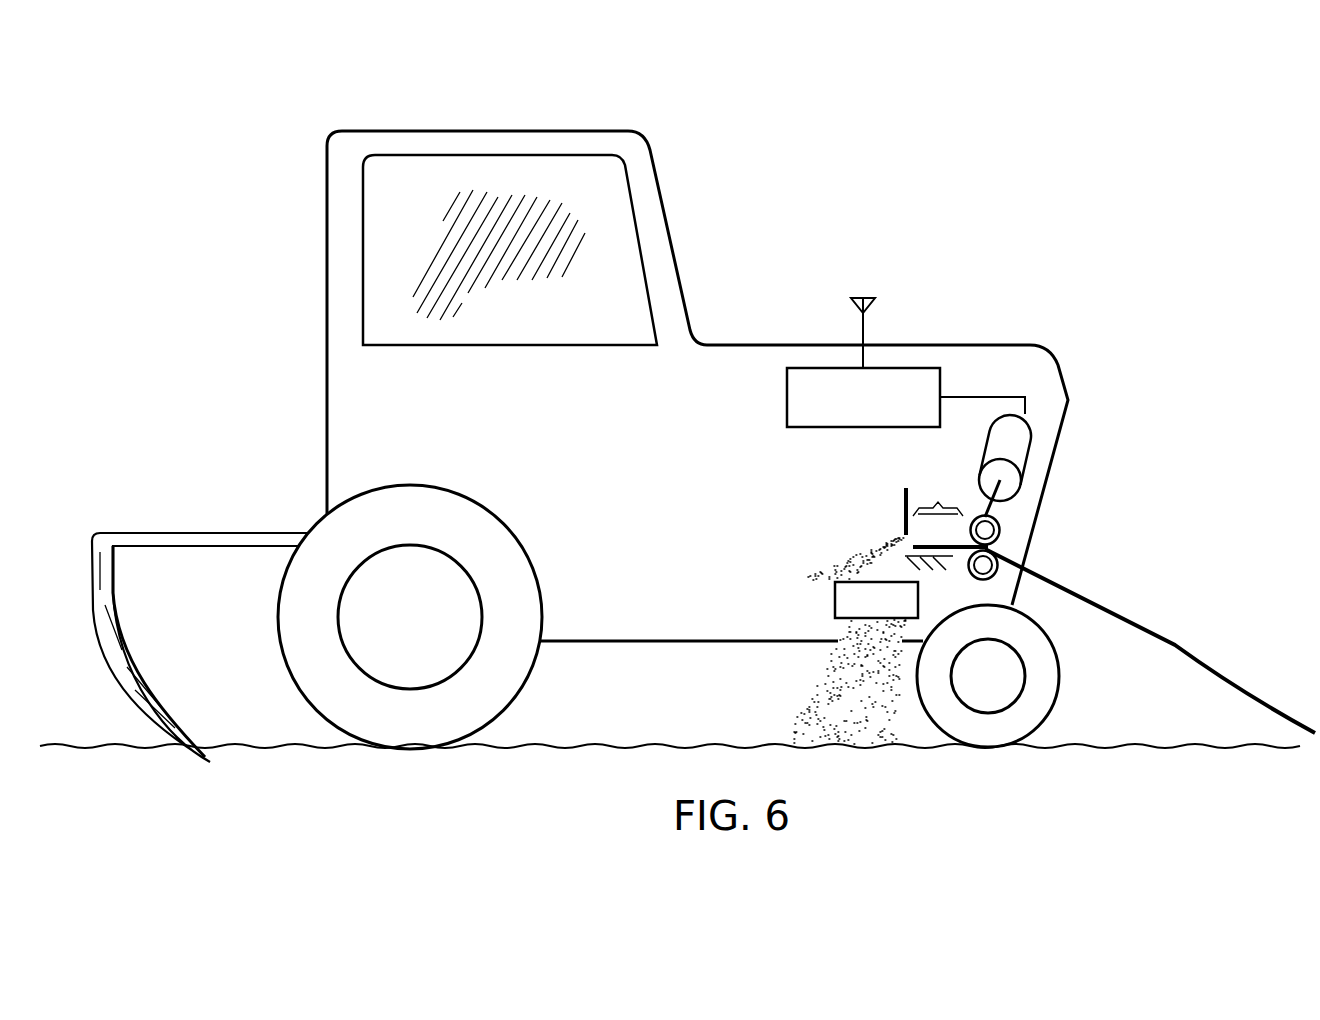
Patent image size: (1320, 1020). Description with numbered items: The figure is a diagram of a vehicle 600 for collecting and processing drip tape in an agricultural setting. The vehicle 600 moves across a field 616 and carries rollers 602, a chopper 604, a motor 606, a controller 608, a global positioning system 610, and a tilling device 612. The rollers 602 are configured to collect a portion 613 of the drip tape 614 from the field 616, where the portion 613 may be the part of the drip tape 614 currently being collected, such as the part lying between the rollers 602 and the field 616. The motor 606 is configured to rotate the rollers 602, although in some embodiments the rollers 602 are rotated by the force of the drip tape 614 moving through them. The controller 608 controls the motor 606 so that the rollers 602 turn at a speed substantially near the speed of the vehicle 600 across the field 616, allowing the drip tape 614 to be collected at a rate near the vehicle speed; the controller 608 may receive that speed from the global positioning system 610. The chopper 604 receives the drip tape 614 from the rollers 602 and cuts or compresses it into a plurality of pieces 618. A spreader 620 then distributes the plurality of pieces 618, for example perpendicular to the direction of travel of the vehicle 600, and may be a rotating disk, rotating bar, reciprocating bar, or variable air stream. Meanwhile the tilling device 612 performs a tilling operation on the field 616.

The vehicle 600 is at (538, 443).
The rollers 602 is at (1002, 532).
The chopper 604 is at (903, 510).
The motor 606 is at (1035, 460).
The controller 608 is at (886, 413).
The global positioning system 610 is at (868, 297).
The tilling device 612 is at (192, 532).
The portion of drip tape 613 is at (938, 492).
The drip tape 614 is at (1192, 625).
The field 616 is at (607, 745).
The plurality of pieces 618 is at (820, 692).
The spreader 620 is at (833, 598).